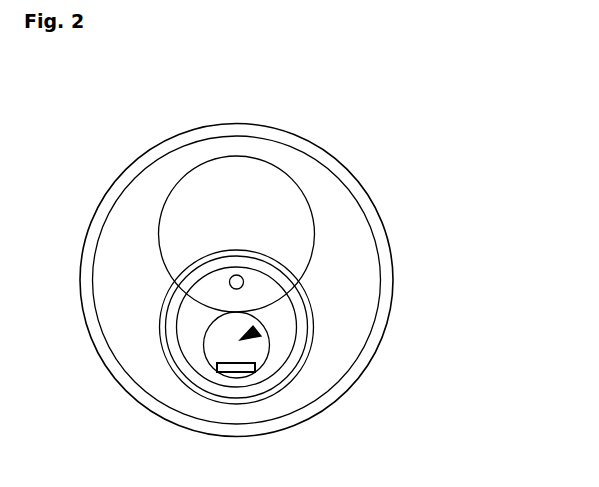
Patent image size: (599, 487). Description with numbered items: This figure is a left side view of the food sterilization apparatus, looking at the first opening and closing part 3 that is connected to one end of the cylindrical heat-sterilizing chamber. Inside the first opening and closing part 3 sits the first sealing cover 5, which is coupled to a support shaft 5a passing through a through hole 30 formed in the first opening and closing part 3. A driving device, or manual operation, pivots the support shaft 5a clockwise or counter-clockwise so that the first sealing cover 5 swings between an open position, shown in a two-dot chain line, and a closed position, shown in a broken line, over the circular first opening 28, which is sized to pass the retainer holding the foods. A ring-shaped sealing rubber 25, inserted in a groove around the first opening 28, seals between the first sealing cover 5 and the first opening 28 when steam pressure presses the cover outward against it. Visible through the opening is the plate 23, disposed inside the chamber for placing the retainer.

The first opening and closing part 3 is at (237, 122).
The first sealing cover 5 is at (290, 180).
The support shaft 5a is at (233, 275).
The plate 23 is at (250, 363).
The sealing rubber 25 is at (174, 360).
The first opening 28 is at (258, 328).
The through hole 30 is at (250, 272).